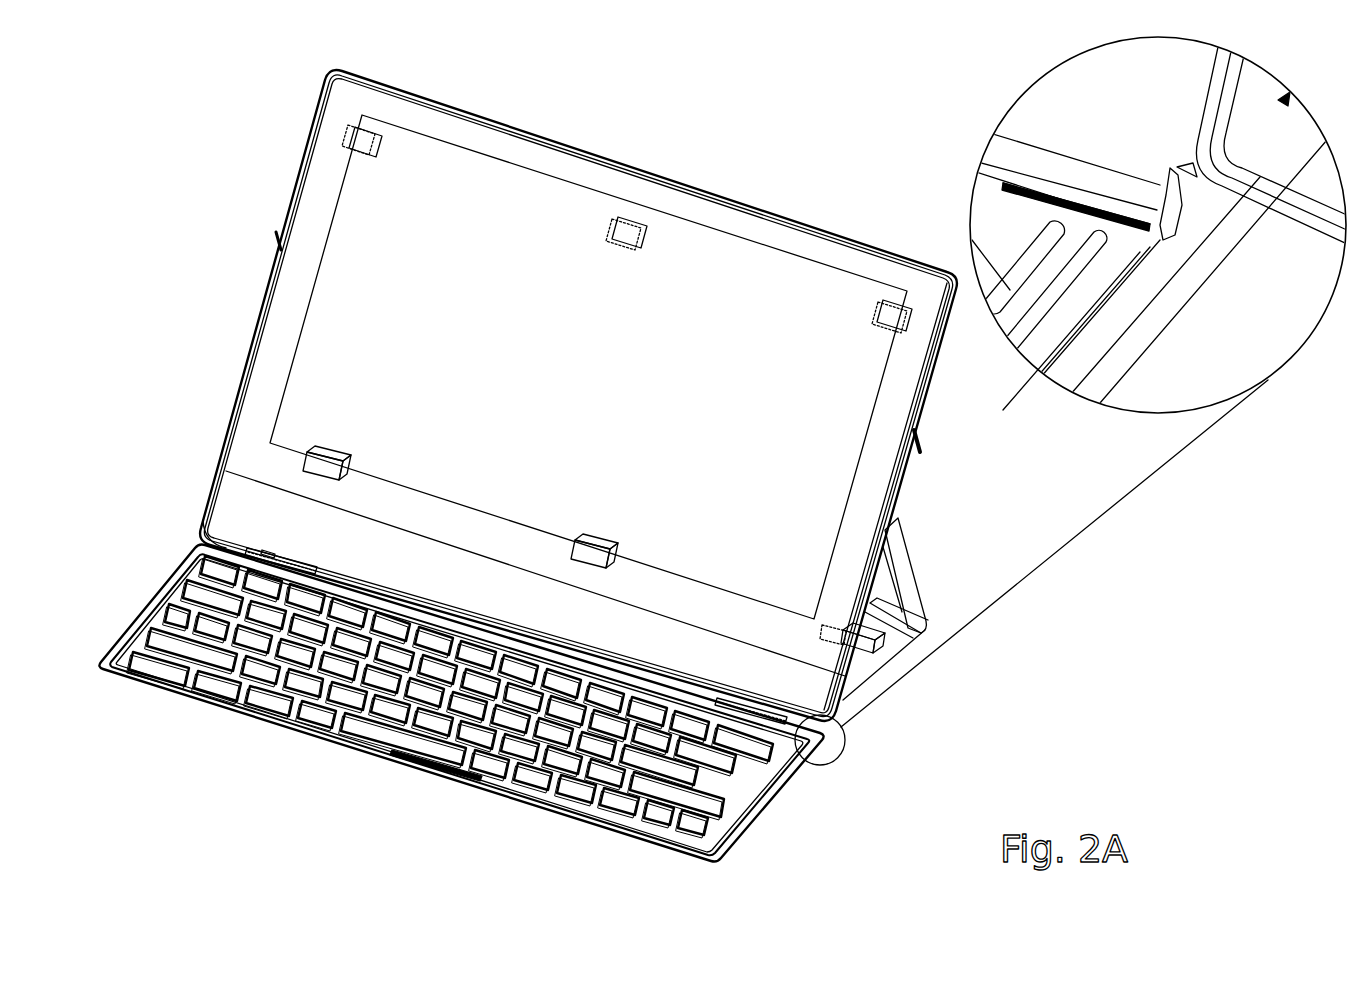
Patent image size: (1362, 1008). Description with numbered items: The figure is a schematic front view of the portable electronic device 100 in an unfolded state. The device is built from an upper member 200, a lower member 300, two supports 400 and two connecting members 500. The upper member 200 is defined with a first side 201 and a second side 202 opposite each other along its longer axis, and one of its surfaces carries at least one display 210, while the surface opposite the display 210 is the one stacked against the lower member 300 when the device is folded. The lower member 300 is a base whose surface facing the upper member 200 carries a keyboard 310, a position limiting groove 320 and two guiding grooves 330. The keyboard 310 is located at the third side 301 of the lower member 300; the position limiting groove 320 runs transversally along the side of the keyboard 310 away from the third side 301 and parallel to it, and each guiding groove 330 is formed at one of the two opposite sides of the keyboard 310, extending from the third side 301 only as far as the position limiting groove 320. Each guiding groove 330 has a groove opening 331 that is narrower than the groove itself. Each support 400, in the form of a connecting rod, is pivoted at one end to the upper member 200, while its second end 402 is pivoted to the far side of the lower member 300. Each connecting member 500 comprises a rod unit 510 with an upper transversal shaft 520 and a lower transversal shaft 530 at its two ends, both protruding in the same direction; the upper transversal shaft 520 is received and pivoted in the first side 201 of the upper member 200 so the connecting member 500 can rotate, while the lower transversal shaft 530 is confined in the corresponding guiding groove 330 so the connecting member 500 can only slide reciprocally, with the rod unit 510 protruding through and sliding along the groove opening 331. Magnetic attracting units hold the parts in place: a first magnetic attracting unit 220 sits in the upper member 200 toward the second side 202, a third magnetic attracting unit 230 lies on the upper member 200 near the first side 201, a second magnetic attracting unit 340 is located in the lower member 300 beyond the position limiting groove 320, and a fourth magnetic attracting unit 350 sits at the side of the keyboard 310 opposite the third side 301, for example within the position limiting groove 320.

The portable electronic device 100 is at (186, 78).
The upper member 200 is at (325, 65).
The first side 201 is at (667, 697).
The second side 202 is at (540, 130).
The display 210 is at (362, 222).
The first magnetic attracting unit 220 is at (632, 228).
The third magnetic attracting unit 230 is at (262, 552).
The lower member 300 is at (722, 872).
The third side 301 is at (522, 797).
The keyboard 310 is at (410, 683).
The position limiting groove 320 is at (248, 558).
The guiding groove 330 is at (1108, 310).
The groove opening 331 is at (1073, 340).
The second magnetic attracting unit 340 is at (868, 642).
The fourth magnetic attracting unit 350 is at (268, 552).
The support 400 is at (915, 546).
The second end 402 is at (910, 593).
The connecting member 500 is at (1192, 214).
The rod unit 510 is at (1085, 166).
The upper transversal shaft 520 is at (1173, 187).
The lower transversal shaft 530 is at (1140, 267).